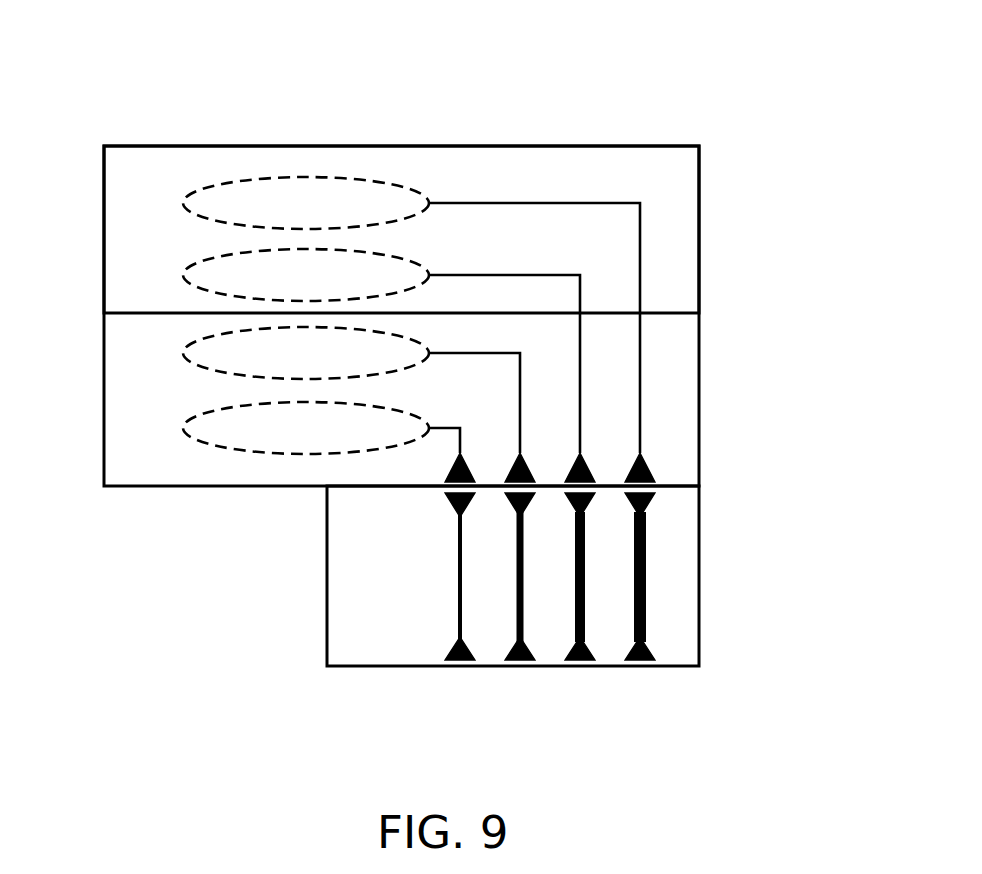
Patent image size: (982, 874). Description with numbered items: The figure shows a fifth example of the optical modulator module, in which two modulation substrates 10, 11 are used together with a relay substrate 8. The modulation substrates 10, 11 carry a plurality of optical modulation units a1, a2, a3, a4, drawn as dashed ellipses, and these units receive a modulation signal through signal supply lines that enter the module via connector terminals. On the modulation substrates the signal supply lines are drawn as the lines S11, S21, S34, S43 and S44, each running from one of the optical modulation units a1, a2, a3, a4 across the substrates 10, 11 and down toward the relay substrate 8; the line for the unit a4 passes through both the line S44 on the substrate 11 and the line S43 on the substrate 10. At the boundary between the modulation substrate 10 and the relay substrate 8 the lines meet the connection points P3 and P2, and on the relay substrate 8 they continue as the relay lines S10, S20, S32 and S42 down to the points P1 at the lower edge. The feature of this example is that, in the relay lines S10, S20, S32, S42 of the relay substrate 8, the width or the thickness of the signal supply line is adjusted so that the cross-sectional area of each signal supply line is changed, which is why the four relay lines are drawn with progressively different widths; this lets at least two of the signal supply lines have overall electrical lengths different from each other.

The relay substrate 8 is at (318, 620).
The modulation substrate 10 is at (710, 346).
The modulation substrate 11 is at (604, 130).
The optical modulation unit a1 is at (183, 428).
The optical modulation unit a2 is at (183, 353).
The optical modulation unit a3 is at (183, 275).
The optical modulation unit a4 is at (183, 203).
The relay line S10 is at (460, 618).
The signal supply line S11 is at (460, 427).
The relay line S20 is at (522, 615).
The signal supply line S21 is at (560, 341).
The relay line S32 is at (585, 615).
The signal supply line S34 is at (489, 275).
The relay line S42 is at (643, 612).
The signal supply line S43 is at (641, 405).
The signal supply line S44 is at (641, 228).
The terminal P1 is at (645, 660).
The terminal P2 is at (648, 505).
The terminal P3 is at (648, 470).